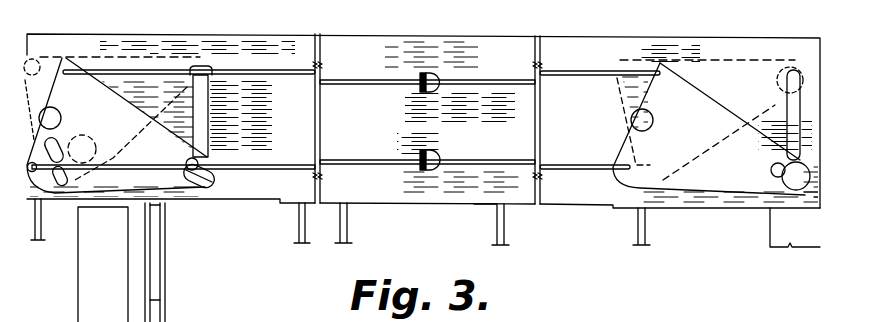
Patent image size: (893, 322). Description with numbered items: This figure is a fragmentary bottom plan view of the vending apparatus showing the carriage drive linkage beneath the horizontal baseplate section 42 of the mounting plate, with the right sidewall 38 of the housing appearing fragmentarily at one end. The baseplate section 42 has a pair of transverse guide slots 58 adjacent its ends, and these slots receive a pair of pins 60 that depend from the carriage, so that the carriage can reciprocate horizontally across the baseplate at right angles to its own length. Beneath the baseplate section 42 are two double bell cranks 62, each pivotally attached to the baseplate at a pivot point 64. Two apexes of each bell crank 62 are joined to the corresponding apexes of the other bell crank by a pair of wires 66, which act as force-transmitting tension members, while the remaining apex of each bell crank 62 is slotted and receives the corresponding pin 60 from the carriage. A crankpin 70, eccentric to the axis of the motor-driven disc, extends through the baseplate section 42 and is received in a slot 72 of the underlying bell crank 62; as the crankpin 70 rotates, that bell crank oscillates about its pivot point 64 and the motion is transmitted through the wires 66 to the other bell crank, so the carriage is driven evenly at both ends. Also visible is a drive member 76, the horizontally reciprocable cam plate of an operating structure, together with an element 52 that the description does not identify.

The baseplate section 42 is at (271, 37).
The wires 66 is at (360, 80).
The double bell cranks 62 is at (144, 121).
The transverse guide slots 58 is at (212, 118).
The pivot points 64 is at (60, 115).
The slot 72 is at (74, 141).
The crankpin 70 is at (101, 146).
The pins 60 is at (185, 177).
The drive member 76 is at (153, 256).
The right sidewall 38 is at (773, 232).
The member 52 is at (713, 314).